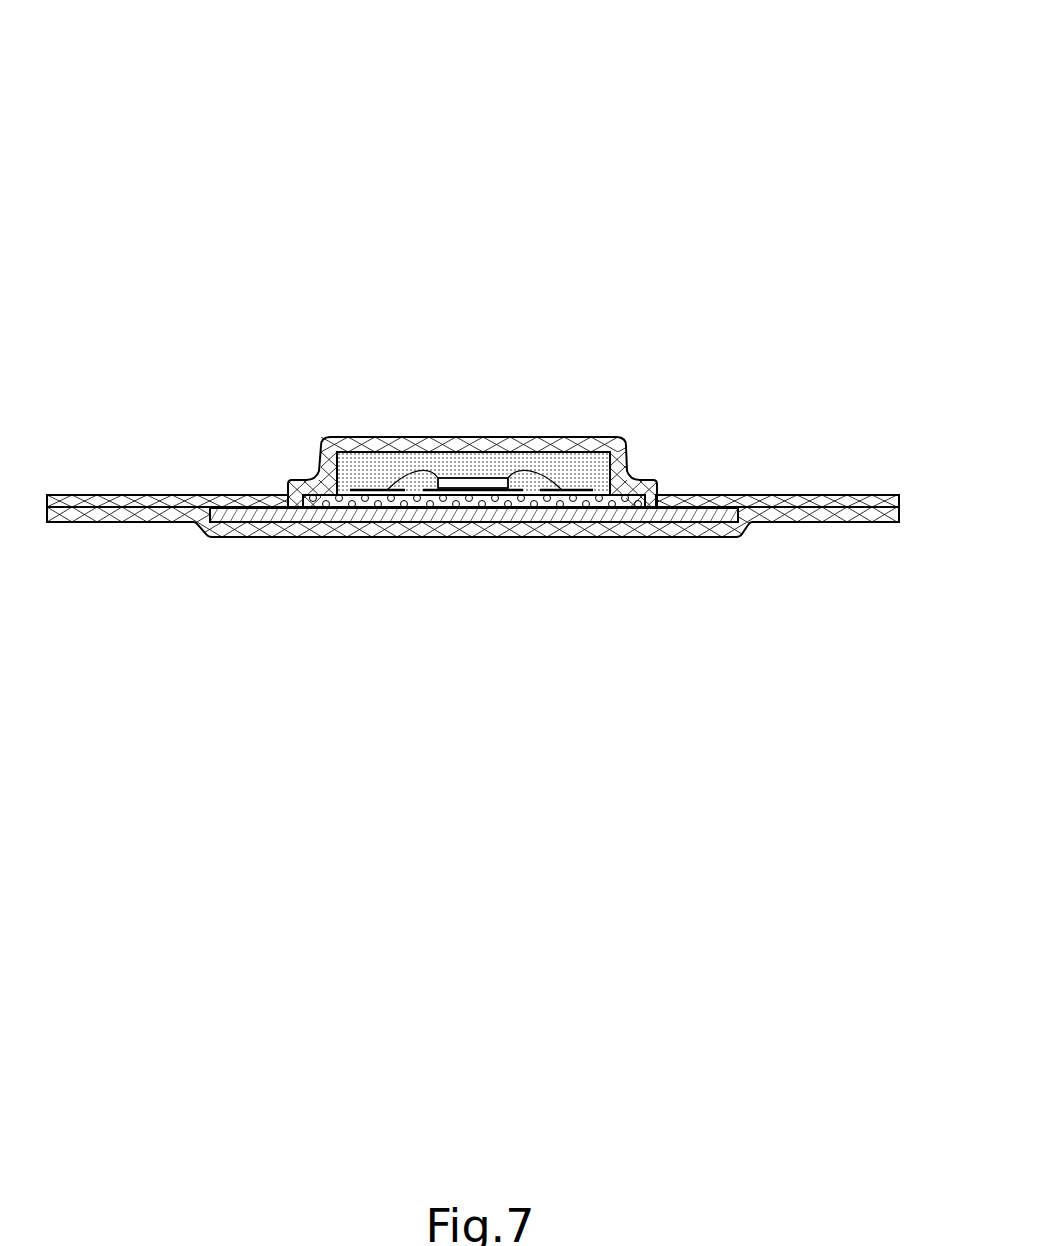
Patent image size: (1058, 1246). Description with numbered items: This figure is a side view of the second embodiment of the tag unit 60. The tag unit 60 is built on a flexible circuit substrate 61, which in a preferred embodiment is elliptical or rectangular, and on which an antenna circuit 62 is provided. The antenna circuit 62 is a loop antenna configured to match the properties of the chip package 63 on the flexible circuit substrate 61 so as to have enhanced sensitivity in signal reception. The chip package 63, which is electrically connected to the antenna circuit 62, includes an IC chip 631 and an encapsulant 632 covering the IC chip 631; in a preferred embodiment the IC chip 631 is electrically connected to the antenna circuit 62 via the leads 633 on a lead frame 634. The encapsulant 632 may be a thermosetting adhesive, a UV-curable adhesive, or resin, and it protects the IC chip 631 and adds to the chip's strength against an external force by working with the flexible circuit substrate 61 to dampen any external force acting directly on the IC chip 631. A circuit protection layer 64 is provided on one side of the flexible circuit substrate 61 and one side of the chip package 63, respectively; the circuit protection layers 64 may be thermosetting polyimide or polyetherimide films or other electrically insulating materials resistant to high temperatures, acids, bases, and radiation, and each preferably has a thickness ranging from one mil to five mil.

The tag unit 60 is at (812, 26).
The flexible circuit substrate 61 is at (643, 518).
The antenna circuit 62 is at (313, 482).
The chip package 63 is at (705, 260).
The IC chip 631 is at (467, 483).
The encapsulant 632 is at (518, 457).
The leads 633 is at (538, 490).
The lead frame 634 is at (583, 503).
The circuit protection layer 64 is at (767, 517).